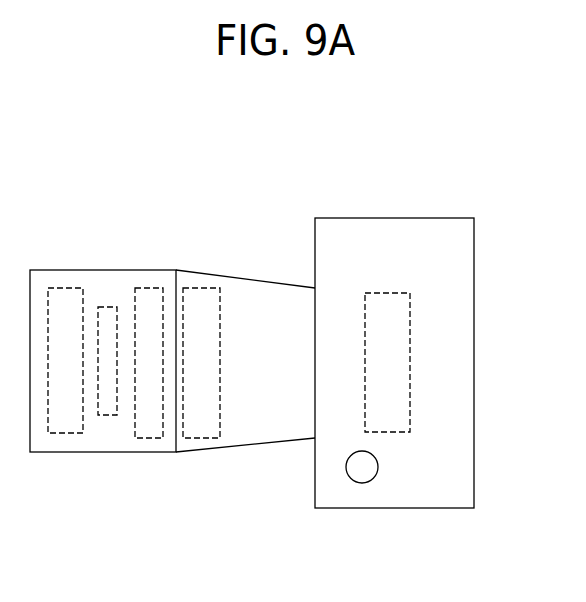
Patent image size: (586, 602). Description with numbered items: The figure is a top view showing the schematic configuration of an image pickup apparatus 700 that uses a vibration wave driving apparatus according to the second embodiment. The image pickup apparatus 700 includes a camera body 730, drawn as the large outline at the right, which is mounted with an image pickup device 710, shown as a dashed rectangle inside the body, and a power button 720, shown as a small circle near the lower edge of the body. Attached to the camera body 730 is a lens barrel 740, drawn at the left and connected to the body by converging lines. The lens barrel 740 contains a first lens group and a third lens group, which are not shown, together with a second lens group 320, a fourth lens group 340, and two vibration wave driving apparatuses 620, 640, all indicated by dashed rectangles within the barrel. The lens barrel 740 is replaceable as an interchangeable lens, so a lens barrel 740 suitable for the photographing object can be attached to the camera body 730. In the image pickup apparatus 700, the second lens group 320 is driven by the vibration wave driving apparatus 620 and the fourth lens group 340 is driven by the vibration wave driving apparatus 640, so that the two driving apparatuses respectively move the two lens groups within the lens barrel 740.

The image pickup apparatus 700 is at (257, 197).
The lens barrel 740 is at (88, 277).
The second lens group 320 is at (63, 432).
The fourth lens group 340 is at (102, 415).
The vibration wave driving apparatus 620 is at (145, 292).
The vibration wave driving apparatus 640 is at (200, 292).
The image pickup device 710 is at (410, 358).
The power button 720 is at (361, 483).
The camera body 730 is at (420, 497).